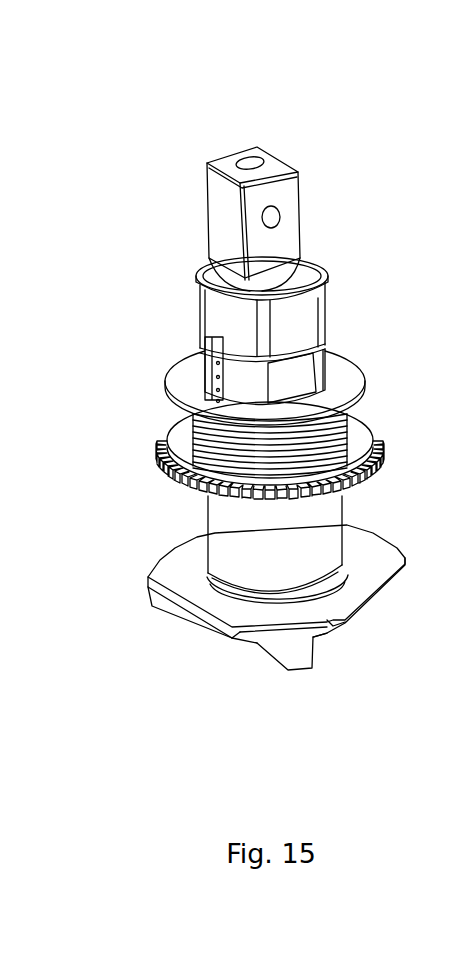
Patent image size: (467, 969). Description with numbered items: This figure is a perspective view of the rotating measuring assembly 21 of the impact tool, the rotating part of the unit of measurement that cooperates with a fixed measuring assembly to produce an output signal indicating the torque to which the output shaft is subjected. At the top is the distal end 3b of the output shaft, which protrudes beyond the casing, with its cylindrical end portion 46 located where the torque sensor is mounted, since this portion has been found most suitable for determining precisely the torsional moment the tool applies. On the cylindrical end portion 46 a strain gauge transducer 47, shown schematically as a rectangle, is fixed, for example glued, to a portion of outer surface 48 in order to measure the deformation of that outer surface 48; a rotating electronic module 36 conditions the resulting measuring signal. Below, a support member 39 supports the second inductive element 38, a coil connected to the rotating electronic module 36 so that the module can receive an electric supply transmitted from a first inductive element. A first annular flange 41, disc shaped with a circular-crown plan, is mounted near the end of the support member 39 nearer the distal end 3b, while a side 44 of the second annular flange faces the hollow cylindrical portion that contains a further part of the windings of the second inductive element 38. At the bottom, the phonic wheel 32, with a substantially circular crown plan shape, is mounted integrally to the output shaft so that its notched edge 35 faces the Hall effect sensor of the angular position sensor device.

The distal end 3b is at (227, 132).
The first annular flange 41 is at (341, 326).
The strain gauge transducer 47 is at (295, 372).
The outer surface 48 is at (250, 388).
The rotating electronic module 36 is at (205, 365).
The cylindrical end portion 46 is at (195, 328).
The rotating measuring assembly 21 is at (130, 355).
The side 44 is at (345, 421).
The support member 39 is at (171, 419).
The second inductive element 38 is at (353, 438).
The notched edge 35 is at (162, 462).
The phonic wheel 32 is at (171, 492).